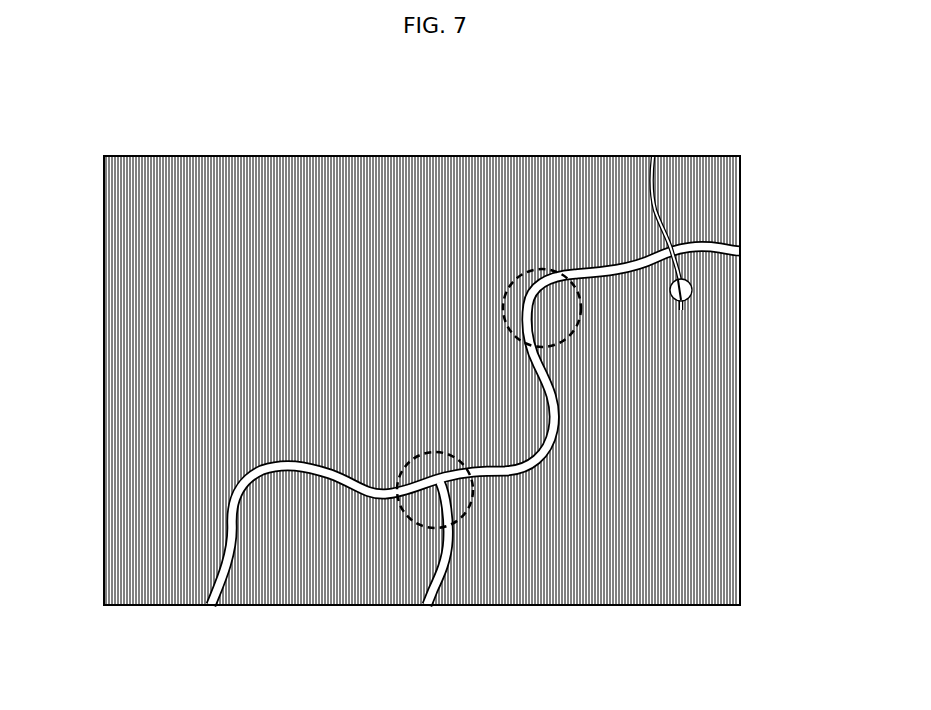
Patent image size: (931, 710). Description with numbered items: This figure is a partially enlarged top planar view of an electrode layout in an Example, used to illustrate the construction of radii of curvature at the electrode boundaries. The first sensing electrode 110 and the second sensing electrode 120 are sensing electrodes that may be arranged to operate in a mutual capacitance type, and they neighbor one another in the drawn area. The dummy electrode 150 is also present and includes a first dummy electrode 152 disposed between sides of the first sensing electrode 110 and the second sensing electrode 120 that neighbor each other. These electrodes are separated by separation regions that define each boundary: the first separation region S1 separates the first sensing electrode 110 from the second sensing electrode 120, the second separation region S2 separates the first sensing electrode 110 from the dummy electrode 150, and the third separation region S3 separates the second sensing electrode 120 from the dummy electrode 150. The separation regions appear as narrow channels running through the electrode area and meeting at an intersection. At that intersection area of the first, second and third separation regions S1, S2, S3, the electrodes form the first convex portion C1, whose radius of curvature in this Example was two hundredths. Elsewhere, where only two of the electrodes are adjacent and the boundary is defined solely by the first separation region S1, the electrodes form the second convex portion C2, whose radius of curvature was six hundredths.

The first sensing electrode 110 is at (720, 445).
The second sensing electrode 120 is at (252, 180).
The dummy electrode 150 is at (475, 416).
The first dummy electrode 152 is at (285, 587).
The first convex portion C1 is at (457, 437).
The second convex portion C2 is at (518, 261).
The first separation region S1 is at (531, 473).
The second separation region S2 is at (455, 572).
The third separation region S3 is at (219, 489).